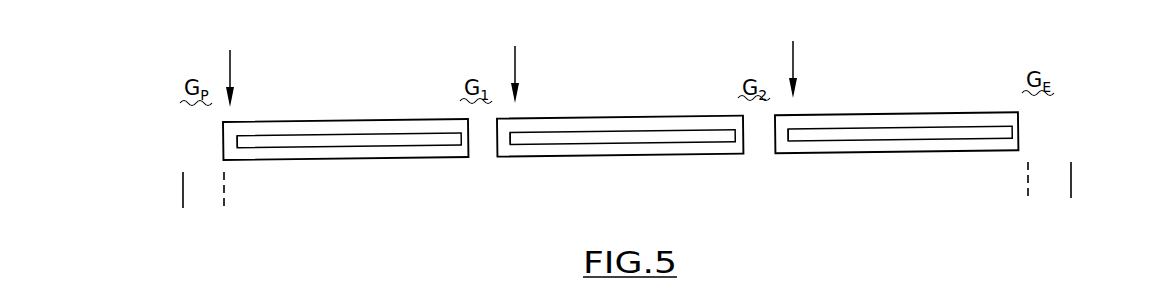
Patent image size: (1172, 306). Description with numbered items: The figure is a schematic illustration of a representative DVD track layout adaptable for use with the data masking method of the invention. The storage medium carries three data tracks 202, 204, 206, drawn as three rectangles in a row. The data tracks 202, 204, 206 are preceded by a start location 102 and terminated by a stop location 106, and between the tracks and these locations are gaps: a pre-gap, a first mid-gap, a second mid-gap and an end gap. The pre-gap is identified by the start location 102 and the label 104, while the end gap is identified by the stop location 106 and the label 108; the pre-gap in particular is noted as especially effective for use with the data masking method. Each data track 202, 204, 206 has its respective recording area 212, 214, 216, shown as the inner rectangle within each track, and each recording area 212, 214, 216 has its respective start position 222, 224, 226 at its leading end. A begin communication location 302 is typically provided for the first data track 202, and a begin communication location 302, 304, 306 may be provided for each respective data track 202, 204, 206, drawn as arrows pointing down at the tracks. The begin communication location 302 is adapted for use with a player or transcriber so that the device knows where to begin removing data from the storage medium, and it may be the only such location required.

The start location 102 is at (183, 192).
The pre-gap label 104 is at (224, 207).
The stop location 106 is at (1071, 185).
The end-gap label 108 is at (1027, 190).
The first data track 202 is at (248, 122).
The second data track 204 is at (533, 122).
The third data track 206 is at (810, 122).
The recording area 212 is at (272, 142).
The recording area 214 is at (560, 141).
The recording area 216 is at (836, 140).
The start position 222 is at (238, 138).
The start position 224 is at (517, 139).
The start position 226 is at (794, 139).
The begin communication location 302 is at (231, 61).
The begin communication location 304 is at (516, 58).
The begin communication location 306 is at (795, 52).